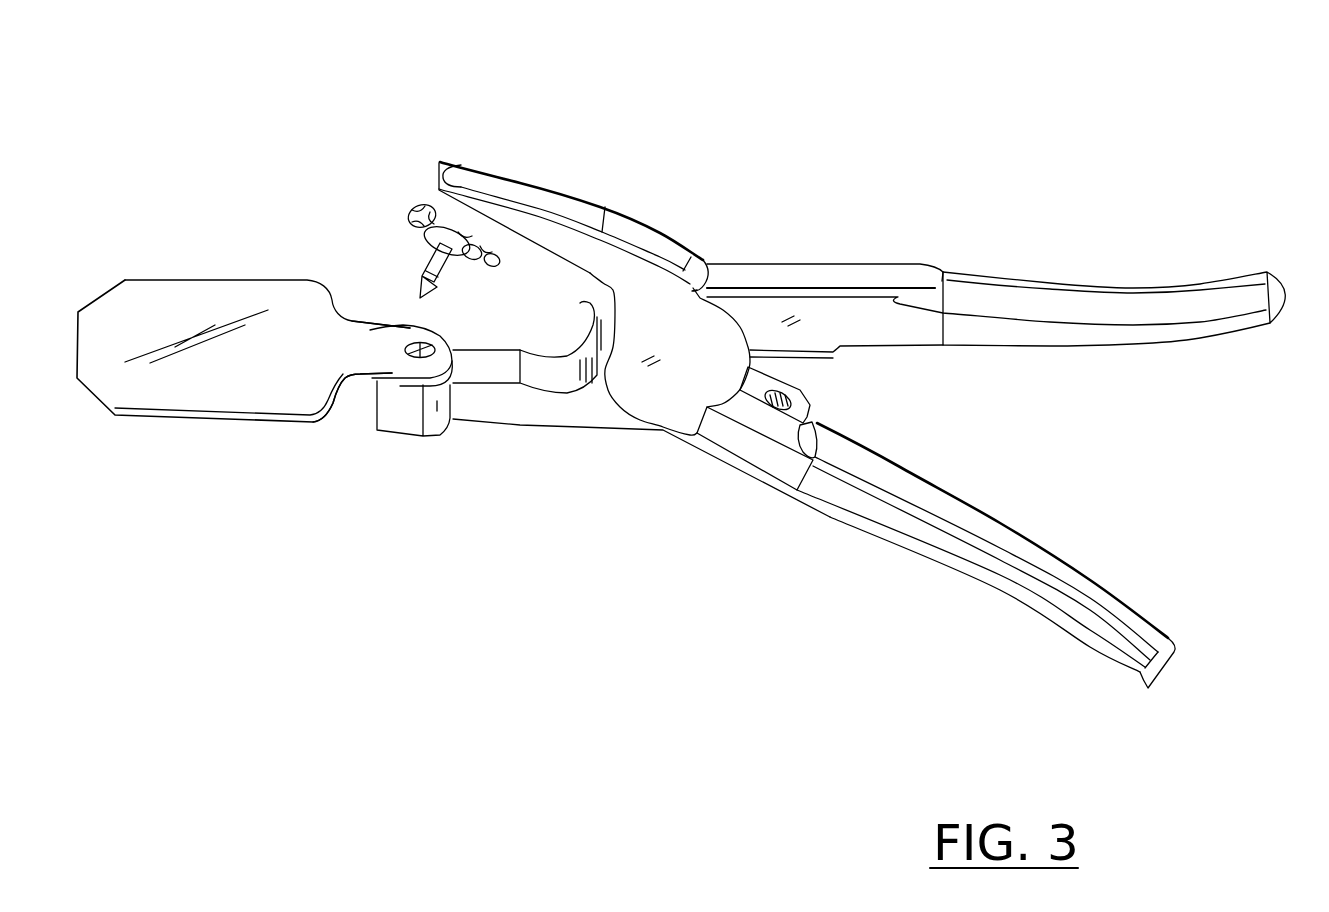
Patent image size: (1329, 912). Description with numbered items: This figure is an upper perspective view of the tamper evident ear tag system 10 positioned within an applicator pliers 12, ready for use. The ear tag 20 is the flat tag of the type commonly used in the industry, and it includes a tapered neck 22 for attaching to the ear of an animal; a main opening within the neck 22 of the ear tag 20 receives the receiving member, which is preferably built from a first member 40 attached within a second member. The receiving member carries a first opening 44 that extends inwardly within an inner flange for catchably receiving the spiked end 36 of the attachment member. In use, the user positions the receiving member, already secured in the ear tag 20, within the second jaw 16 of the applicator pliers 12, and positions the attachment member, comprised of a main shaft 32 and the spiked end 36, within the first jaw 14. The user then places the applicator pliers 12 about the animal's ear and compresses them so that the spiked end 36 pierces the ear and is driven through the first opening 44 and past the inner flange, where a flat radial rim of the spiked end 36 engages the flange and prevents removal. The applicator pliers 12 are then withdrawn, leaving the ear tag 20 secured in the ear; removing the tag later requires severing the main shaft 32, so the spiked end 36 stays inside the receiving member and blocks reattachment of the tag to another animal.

The tamper evident ear tag system 10 is at (200, 118).
The applicator pliers 12 is at (876, 269).
The first jaw 14 is at (557, 203).
The second jaw 16 is at (538, 420).
The ear tag 20 is at (195, 318).
The tapered neck 22 is at (362, 364).
The main shaft 32 is at (477, 148).
The spiked end 36 is at (428, 305).
The first member 40 is at (397, 322).
The first opening 44 is at (413, 350).